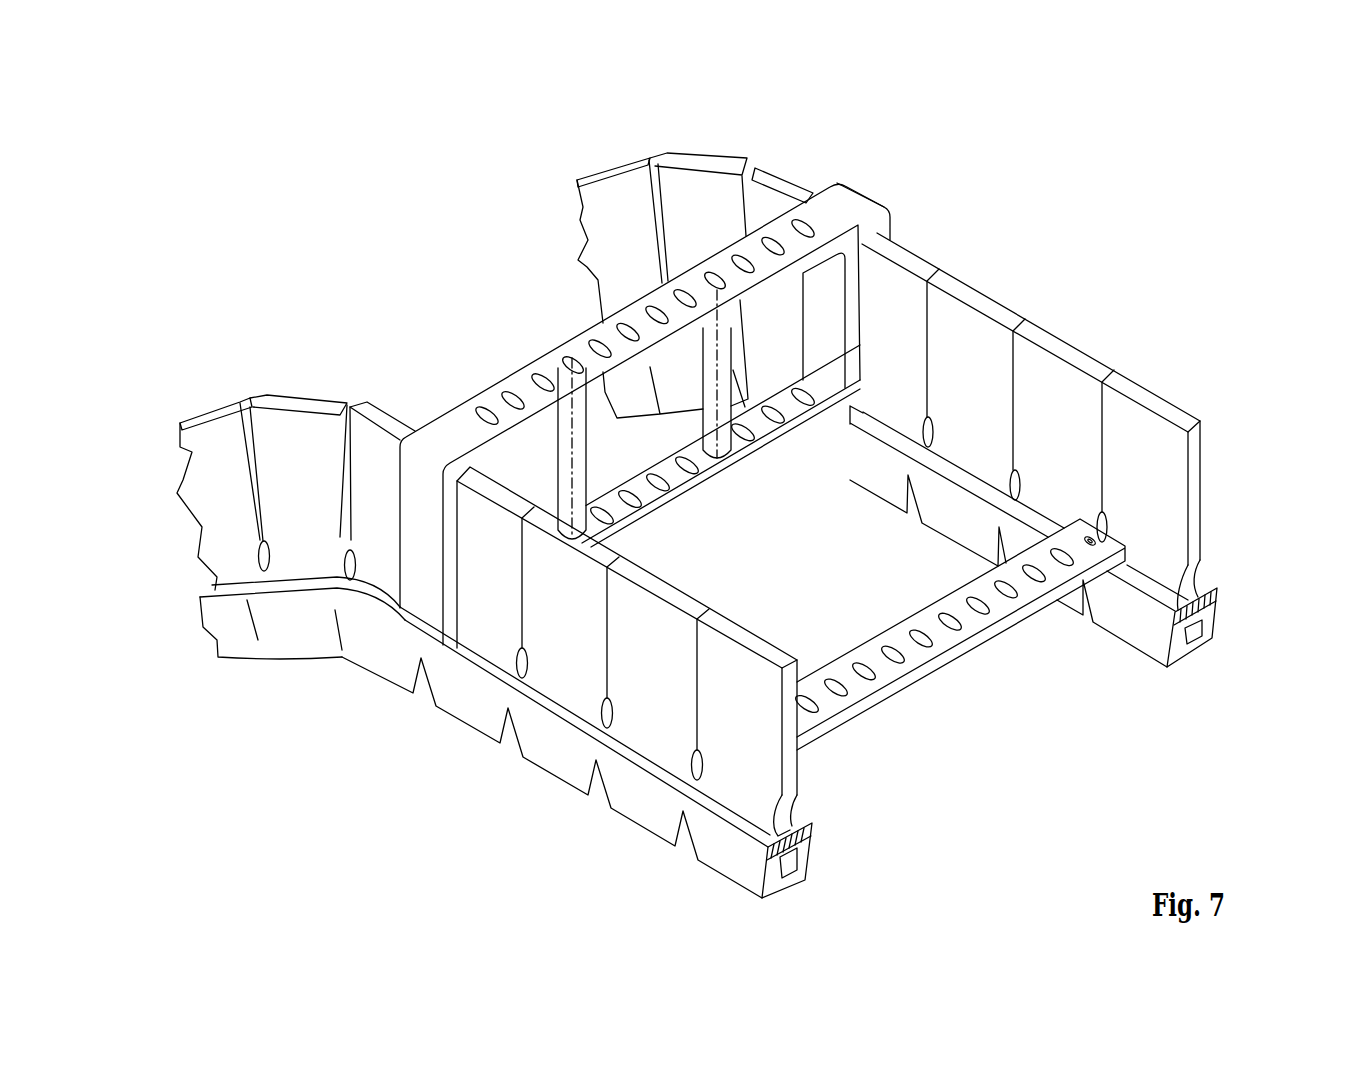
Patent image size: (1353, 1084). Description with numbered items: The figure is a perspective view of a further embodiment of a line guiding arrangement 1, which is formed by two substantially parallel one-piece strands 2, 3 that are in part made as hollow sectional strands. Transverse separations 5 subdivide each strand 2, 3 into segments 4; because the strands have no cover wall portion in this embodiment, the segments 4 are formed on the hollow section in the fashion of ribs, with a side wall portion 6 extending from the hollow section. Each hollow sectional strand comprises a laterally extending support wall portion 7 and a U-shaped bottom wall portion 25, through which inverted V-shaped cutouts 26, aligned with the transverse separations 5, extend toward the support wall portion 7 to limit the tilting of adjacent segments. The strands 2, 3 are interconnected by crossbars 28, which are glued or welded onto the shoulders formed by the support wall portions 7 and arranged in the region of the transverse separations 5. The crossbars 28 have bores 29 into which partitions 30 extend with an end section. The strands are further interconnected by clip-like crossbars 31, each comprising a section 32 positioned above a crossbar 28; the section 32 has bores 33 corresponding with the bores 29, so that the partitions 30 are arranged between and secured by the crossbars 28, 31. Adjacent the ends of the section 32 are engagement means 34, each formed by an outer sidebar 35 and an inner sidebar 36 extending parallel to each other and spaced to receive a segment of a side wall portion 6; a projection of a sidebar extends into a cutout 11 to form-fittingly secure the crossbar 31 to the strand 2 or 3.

The line guiding arrangement 1 is at (1084, 204).
The strand 2 is at (697, 165).
The strand 3 is at (310, 400).
The segment 4 is at (1060, 348).
The transverse separation 5 is at (693, 718).
The side wall portion 6 is at (552, 658).
The support wall portion 7 is at (808, 838).
The cutout 11 is at (612, 718).
The bottom wall portion 25 is at (788, 876).
The cutout 26 is at (682, 853).
The crossbar 28 is at (717, 487).
The bore 29 is at (1007, 593).
The partition 30 is at (578, 458).
The crossbar 31 is at (822, 208).
The section 32 is at (518, 378).
The bore 33 is at (607, 323).
The engagement means 34 is at (432, 448).
The outer sidebar 35 is at (342, 638).
The inner sidebar 36 is at (832, 313).